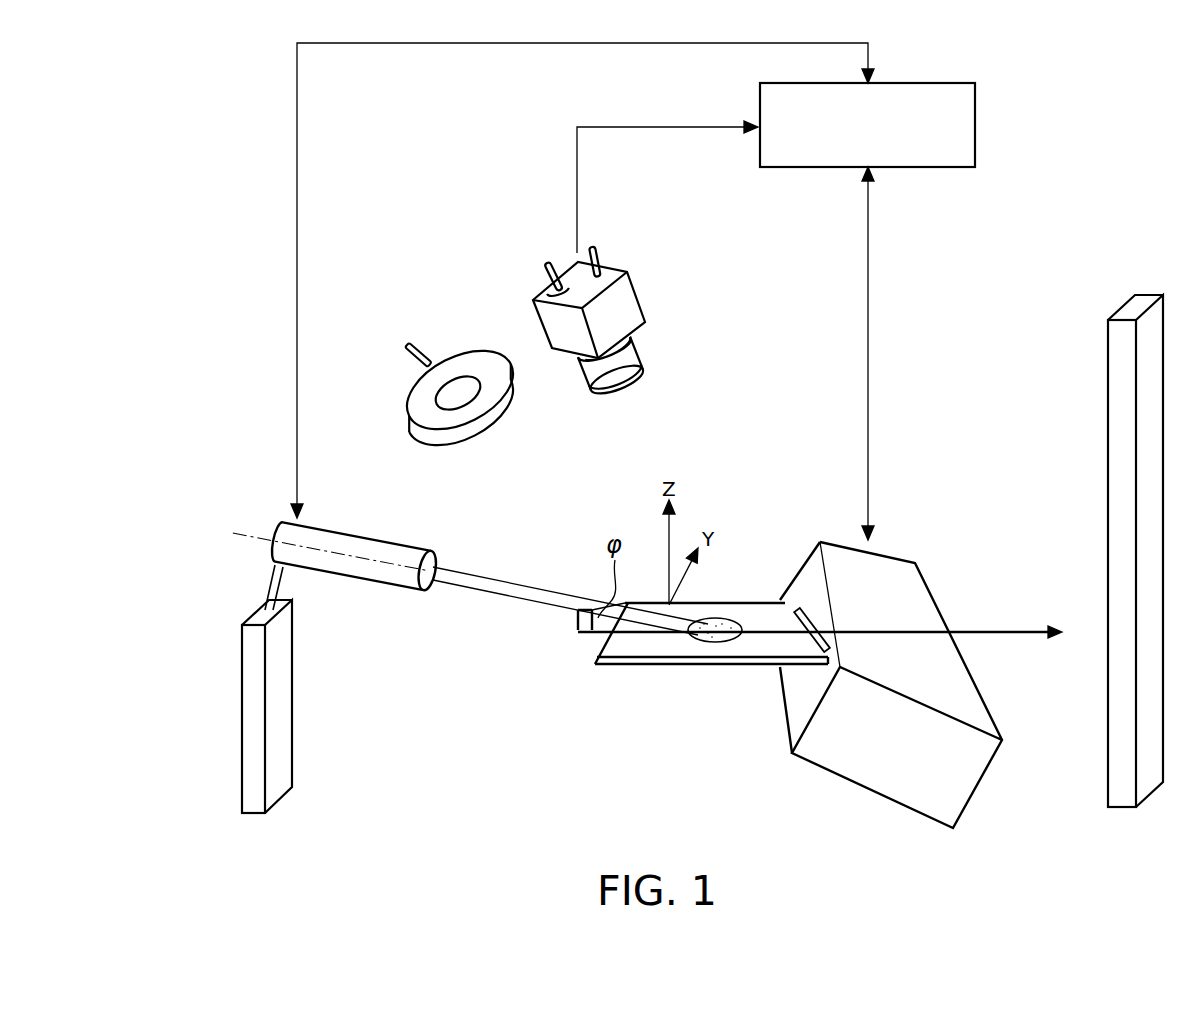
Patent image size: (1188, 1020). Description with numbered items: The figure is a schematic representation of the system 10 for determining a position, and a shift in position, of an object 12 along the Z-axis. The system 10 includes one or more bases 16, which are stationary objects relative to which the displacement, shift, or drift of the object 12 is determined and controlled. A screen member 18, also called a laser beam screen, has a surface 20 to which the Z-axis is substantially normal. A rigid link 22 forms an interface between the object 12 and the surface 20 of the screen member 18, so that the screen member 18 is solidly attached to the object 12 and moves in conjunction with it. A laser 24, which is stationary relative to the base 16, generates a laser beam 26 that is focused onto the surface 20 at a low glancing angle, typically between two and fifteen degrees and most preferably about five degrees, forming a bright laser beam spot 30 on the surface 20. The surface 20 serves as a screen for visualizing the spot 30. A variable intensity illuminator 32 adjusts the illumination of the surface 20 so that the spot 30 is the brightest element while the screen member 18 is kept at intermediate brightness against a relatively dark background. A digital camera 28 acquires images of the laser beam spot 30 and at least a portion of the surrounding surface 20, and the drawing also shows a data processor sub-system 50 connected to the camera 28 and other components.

The system 10 is at (570, 776).
The object 12 is at (877, 797).
The base 16 is at (242, 718).
The screen member 18 is at (708, 668).
The surface 20 is at (640, 648).
The link 22 is at (812, 605).
The laser 24 is at (355, 586).
The laser beam 26 is at (418, 347).
The digital camera 28 is at (637, 292).
The laser beam spot 30 is at (722, 625).
The variable intensity illuminator 32 is at (430, 443).
The data processor sub-system 50 is at (975, 120).